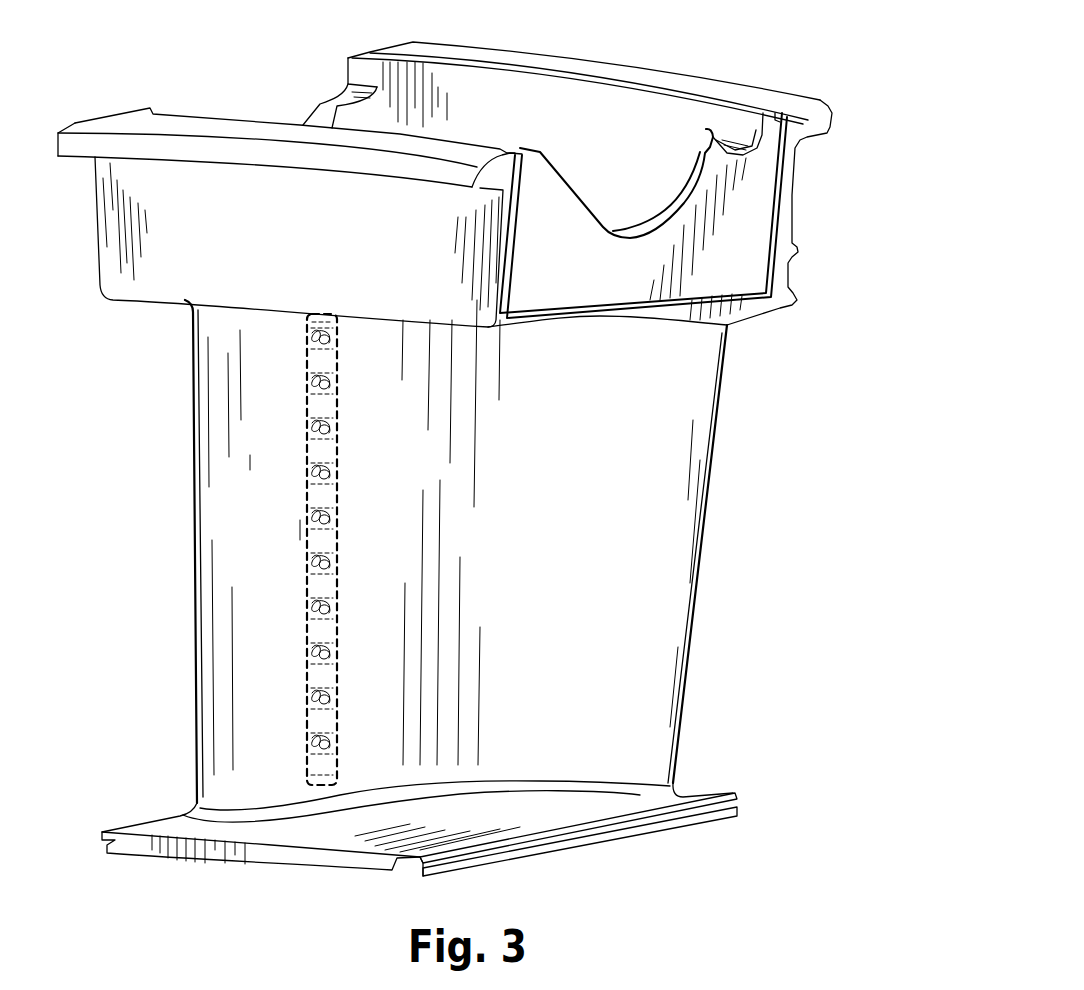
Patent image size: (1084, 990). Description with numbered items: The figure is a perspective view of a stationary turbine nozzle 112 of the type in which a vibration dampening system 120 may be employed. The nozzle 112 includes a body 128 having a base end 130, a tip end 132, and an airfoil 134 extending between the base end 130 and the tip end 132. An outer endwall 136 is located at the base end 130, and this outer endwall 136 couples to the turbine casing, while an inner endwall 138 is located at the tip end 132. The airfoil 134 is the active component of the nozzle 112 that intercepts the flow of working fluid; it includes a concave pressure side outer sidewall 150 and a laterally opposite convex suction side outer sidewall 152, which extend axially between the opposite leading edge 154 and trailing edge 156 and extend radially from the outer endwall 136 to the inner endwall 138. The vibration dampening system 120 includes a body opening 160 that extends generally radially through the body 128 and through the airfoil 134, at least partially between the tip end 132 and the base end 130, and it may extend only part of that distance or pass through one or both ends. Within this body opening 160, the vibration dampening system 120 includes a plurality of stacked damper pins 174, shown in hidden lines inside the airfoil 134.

The nozzle 112 is at (821, 82).
The vibration dampening system 120 is at (308, 416).
The body 128 is at (860, 118).
The base end 130 is at (800, 200).
The tip end 132 is at (747, 805).
The airfoil 134 is at (641, 561).
The outer endwall 136 is at (94, 118).
The inner endwall 138 is at (540, 808).
The pressure side outer sidewall 150 is at (533, 630).
The suction side outer sidewall 152 is at (257, 463).
The leading edge 154 is at (195, 677).
The trailing edge 156 is at (700, 518).
The body opening 160 is at (307, 530).
The damper pins 174 is at (320, 677).